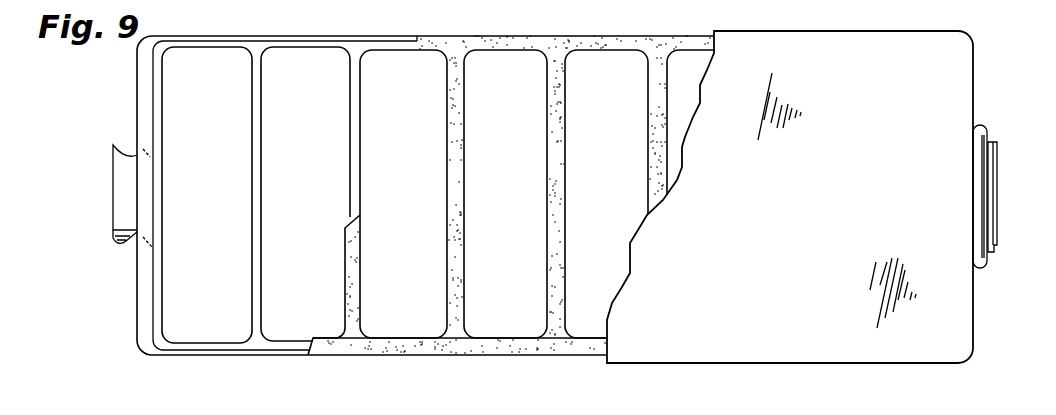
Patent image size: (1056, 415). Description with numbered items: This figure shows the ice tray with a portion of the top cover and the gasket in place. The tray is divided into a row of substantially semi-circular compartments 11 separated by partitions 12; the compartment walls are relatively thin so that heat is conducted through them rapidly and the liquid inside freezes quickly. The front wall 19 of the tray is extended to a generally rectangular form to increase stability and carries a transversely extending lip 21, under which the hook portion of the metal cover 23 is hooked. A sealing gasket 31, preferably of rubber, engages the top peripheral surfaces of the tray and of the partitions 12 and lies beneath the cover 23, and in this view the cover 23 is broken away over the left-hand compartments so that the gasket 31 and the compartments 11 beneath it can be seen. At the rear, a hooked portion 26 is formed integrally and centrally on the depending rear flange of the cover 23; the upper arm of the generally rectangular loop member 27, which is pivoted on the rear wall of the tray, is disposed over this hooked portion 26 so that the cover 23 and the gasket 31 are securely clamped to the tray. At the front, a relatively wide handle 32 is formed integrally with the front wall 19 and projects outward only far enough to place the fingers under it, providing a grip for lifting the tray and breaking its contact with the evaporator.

The compartment 11 is at (558, 194).
The partition 12 is at (257, 122).
The front wall 19 is at (158, 100).
The lip 21 is at (140, 308).
The cover 23 is at (790, 197).
The hooked portion 26 is at (995, 195).
The loop member 27 is at (986, 124).
The sealing gasket 31 is at (563, 44).
The handle 32 is at (113, 233).